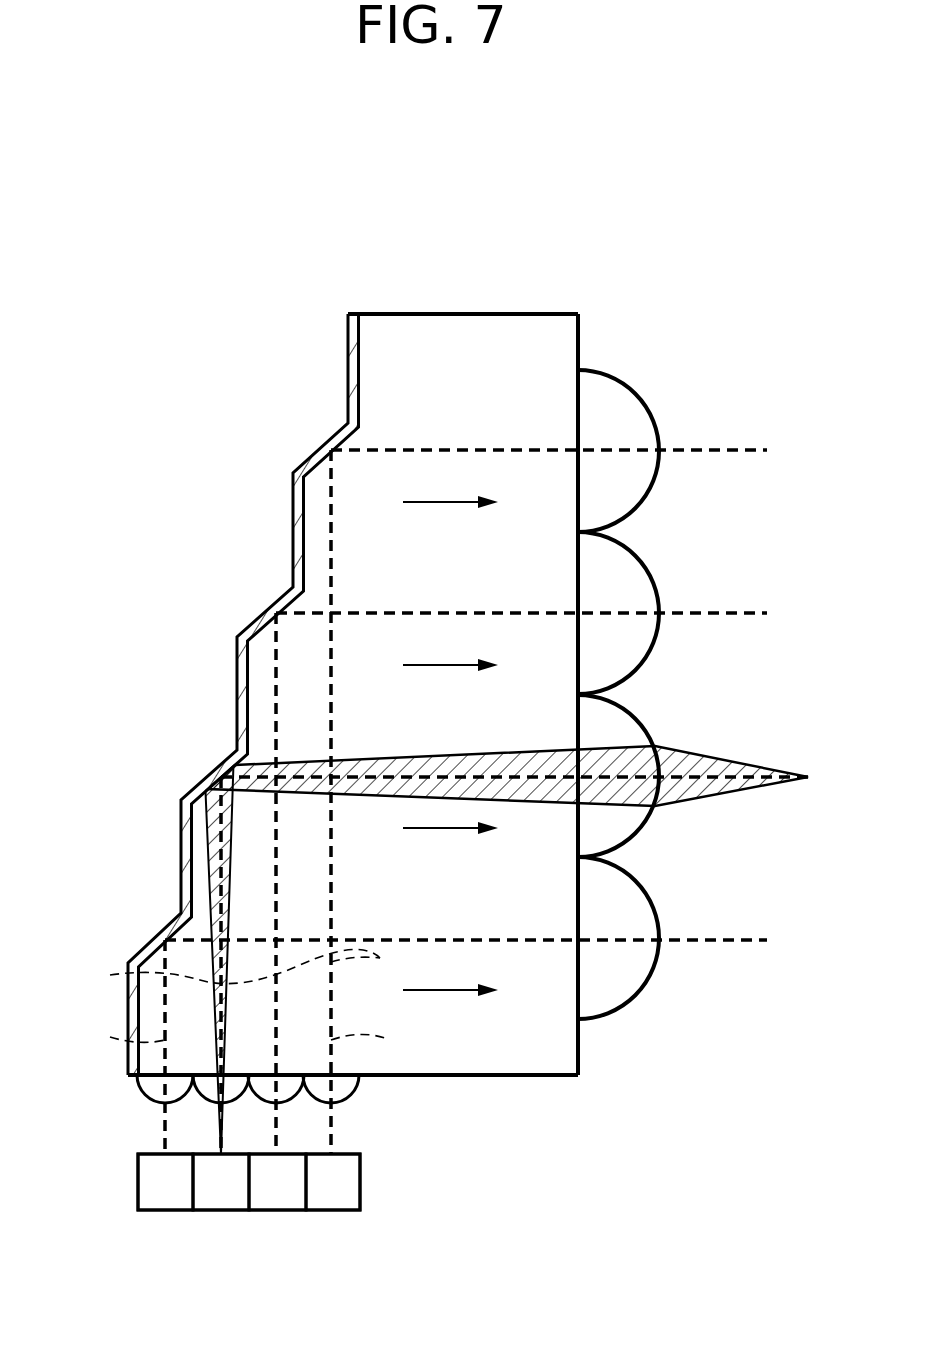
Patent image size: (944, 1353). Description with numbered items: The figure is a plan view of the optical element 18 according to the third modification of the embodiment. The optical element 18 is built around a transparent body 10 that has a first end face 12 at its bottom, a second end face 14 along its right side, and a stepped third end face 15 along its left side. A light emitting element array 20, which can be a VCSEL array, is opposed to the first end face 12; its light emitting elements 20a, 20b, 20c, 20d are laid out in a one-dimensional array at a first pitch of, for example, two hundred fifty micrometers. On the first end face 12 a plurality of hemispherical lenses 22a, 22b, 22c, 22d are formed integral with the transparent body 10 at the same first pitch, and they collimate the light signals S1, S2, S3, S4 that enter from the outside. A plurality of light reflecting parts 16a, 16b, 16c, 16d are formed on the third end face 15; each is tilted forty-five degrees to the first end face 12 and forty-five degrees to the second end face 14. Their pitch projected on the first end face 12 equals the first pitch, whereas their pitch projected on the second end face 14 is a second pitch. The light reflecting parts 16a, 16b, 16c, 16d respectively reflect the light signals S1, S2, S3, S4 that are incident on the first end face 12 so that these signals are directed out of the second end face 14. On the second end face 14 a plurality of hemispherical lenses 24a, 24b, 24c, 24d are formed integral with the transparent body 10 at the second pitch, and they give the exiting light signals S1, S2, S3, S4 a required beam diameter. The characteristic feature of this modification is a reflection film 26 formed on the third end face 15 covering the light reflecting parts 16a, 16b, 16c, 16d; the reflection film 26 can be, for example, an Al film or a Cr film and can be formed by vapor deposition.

The optical element 18 is at (424, 262).
The transparent body 10 is at (483, 333).
The second end face 14 is at (580, 333).
The first end face 12 is at (522, 1078).
The reflection film 26 is at (352, 314).
The third end face 15 is at (188, 607).
The light reflecting part 16a is at (181, 913).
The light reflecting part 16b is at (227, 757).
The light reflecting part 16c is at (290, 595).
The light reflecting part 16d is at (338, 432).
The lens 24a is at (640, 1000).
The lens 24b is at (640, 835).
The lens 24c is at (645, 663).
The lens 24d is at (645, 500).
The lens 22a is at (150, 1100).
The lens 22b is at (205, 1102).
The lens 22c is at (292, 1102).
The lens 22d is at (345, 1100).
The light emitting element array 20 is at (385, 1187).
The light emitting element 20a is at (163, 1212).
The light emitting element 20b is at (220, 1212).
The light emitting element 20c is at (275, 1212).
The light emitting element 20d is at (330, 1212).
The light signal S1 is at (121, 1037).
The light signal S2 is at (228, 971).
The light signal S3 is at (377, 965).
The light signal S4 is at (377, 1045).